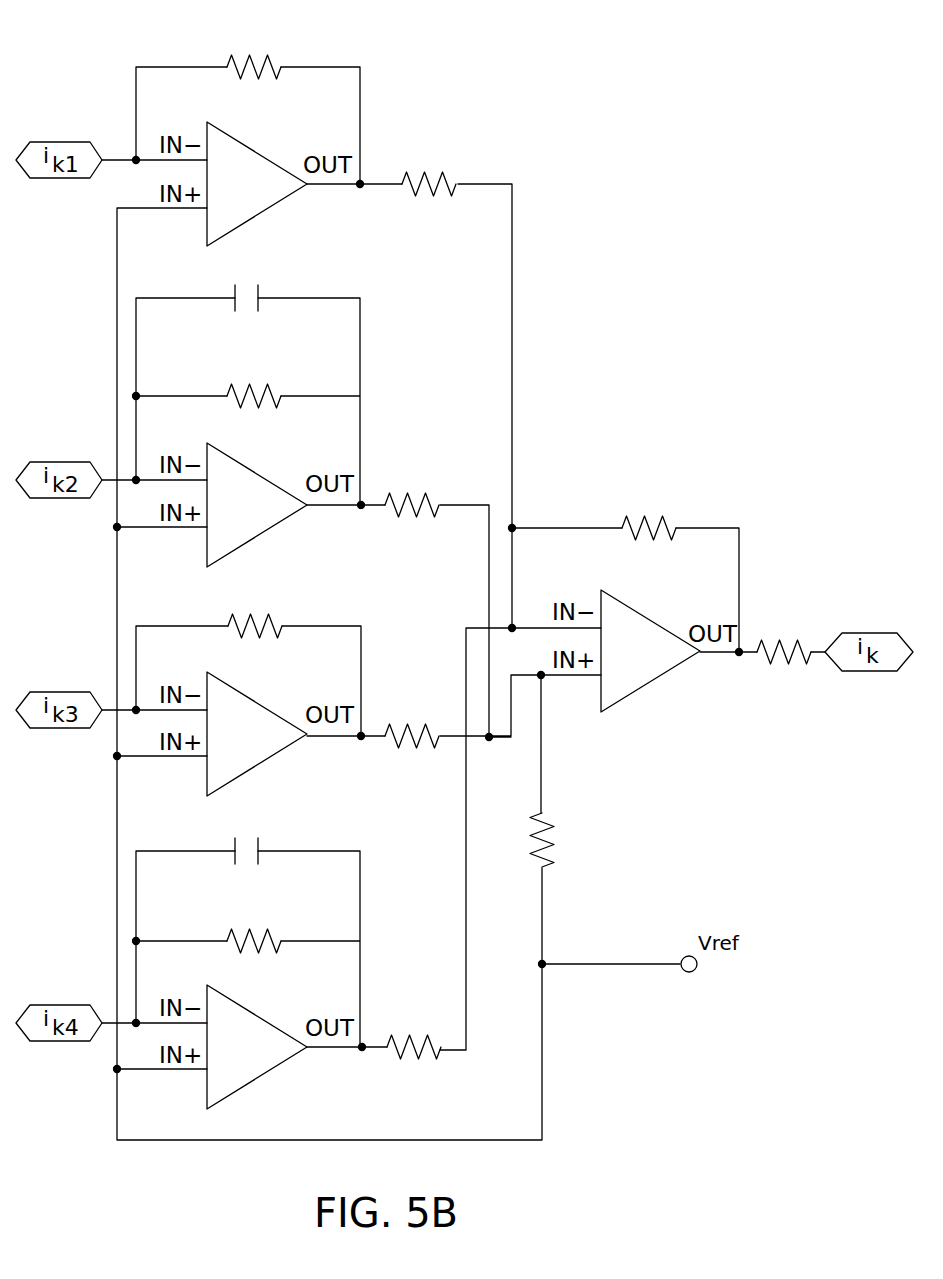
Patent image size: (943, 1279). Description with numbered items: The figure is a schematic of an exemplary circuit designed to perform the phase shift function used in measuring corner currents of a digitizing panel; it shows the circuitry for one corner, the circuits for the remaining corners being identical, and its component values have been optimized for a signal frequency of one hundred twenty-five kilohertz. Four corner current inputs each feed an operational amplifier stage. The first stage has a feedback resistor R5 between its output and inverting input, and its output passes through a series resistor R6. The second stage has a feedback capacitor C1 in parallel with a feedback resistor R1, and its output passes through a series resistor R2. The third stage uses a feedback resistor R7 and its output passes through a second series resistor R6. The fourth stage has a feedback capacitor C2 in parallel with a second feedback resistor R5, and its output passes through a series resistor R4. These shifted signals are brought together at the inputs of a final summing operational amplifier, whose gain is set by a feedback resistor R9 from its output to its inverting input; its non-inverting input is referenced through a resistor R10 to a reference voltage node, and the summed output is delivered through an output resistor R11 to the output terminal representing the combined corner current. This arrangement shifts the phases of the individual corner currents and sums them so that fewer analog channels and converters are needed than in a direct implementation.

The feedback resistor 5.76K / 47K R5 is at (257, 502).
The resistor 4.7K R6 is at (418, 461).
The capacitor 220pf C1 is at (247, 301).
The feedback resistor 47K R1 is at (254, 396).
The resistor 4.7K R2 is at (410, 509).
The feedback resistor 5.76K R7 is at (257, 624).
The capacitor 220pf C2 is at (250, 853).
The resistor 4.7K R4 is at (412, 1052).
The feedback resistor 4.7K R9 is at (625, 568).
The resistor 4.7K to Vref R10 is at (550, 840).
The output resistor 4.7K R11 is at (762, 652).